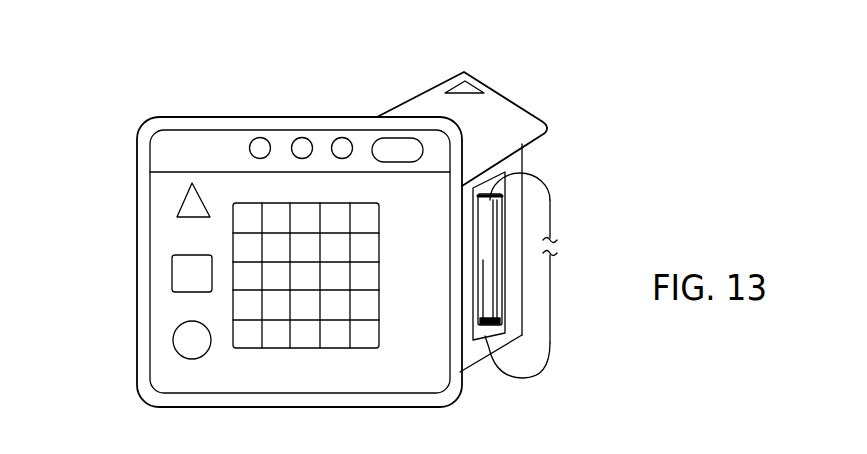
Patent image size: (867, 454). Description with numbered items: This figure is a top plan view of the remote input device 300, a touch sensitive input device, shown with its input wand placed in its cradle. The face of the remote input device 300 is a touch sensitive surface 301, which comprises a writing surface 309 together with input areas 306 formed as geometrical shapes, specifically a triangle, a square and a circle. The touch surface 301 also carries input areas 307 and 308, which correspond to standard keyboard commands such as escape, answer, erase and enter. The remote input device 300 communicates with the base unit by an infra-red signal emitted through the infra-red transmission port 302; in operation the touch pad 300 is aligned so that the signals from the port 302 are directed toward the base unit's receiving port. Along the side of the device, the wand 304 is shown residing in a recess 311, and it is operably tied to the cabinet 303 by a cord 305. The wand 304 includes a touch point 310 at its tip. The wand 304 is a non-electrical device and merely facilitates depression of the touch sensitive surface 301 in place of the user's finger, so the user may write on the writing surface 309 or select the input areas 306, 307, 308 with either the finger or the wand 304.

The remote input device 300 is at (248, 117).
The touch sensitive surface 301 is at (208, 180).
The infra-red transmission port 302 is at (464, 72).
The cabinet 303 is at (522, 310).
The wand 304 is at (495, 222).
The cord 305 is at (555, 223).
The input areas 306 is at (178, 337).
The input areas 307 is at (339, 148).
The input area 308 is at (397, 150).
The writing surface 309 is at (275, 248).
The touch point 310 is at (481, 328).
The recess 311 is at (496, 328).